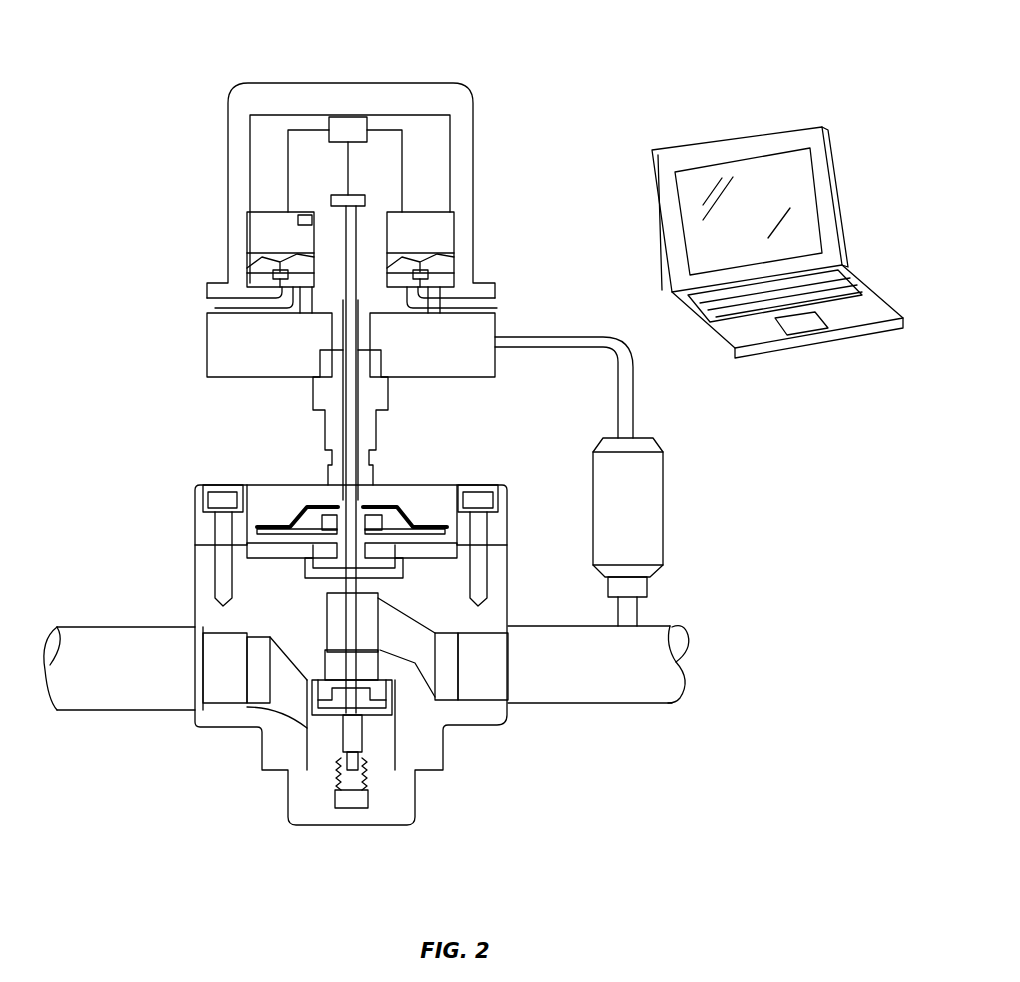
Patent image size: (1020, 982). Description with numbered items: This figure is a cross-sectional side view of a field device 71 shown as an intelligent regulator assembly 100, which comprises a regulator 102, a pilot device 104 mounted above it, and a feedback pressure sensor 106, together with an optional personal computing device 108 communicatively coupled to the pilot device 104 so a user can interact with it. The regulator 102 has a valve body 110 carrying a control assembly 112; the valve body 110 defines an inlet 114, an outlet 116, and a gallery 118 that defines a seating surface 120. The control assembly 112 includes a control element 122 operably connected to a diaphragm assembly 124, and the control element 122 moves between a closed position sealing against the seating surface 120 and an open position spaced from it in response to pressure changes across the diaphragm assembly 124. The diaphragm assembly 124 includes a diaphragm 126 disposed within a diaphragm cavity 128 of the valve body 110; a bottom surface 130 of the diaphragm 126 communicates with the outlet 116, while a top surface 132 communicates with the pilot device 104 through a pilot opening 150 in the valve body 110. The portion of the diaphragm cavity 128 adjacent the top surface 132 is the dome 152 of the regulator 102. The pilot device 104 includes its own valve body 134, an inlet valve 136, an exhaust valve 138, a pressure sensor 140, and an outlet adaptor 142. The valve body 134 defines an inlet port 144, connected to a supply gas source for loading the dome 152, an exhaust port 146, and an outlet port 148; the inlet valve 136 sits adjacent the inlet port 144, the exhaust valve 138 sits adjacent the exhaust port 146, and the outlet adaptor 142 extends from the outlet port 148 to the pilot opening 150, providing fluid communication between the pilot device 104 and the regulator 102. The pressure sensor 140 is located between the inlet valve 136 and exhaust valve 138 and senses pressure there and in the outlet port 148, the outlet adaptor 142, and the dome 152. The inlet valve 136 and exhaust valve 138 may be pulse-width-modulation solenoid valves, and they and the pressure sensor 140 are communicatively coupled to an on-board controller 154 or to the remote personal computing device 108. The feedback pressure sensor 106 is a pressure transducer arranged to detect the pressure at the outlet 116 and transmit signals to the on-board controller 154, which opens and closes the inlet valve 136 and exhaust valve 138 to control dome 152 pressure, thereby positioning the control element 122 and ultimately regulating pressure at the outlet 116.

The field device 71 is at (555, 32).
The intelligent regulator assembly 100 is at (505, 48).
The regulator 102 is at (232, 770).
The pilot device 104 is at (245, 75).
The feedback pressure sensor 106 is at (677, 475).
The personal computing device 108 is at (797, 95).
The valve body 110 is at (453, 728).
The control assembly 112 is at (333, 612).
The inlet 114 is at (195, 710).
The outlet 116 is at (508, 702).
The gallery 118 is at (397, 682).
The seating surface 120 is at (350, 642).
The control element 122 is at (307, 680).
The diaphragm assembly 124 is at (265, 505).
The diaphragm 126 is at (258, 530).
The diaphragm cavity 128 is at (436, 558).
The bottom surface 130 is at (433, 553).
The top surface 132 is at (433, 520).
The valve body 134 is at (198, 350).
The inlet valve 136 is at (272, 225).
The exhaust valve 138 is at (433, 212).
The pressure sensor 140 is at (357, 222).
The outlet adaptor 142 is at (322, 392).
The inlet port 144 is at (212, 305).
The exhaust port 146 is at (497, 292).
The outlet port 148 is at (375, 350).
The pilot opening 150 is at (373, 505).
The dome 152 is at (325, 500).
The on-board controller 154 is at (349, 125).